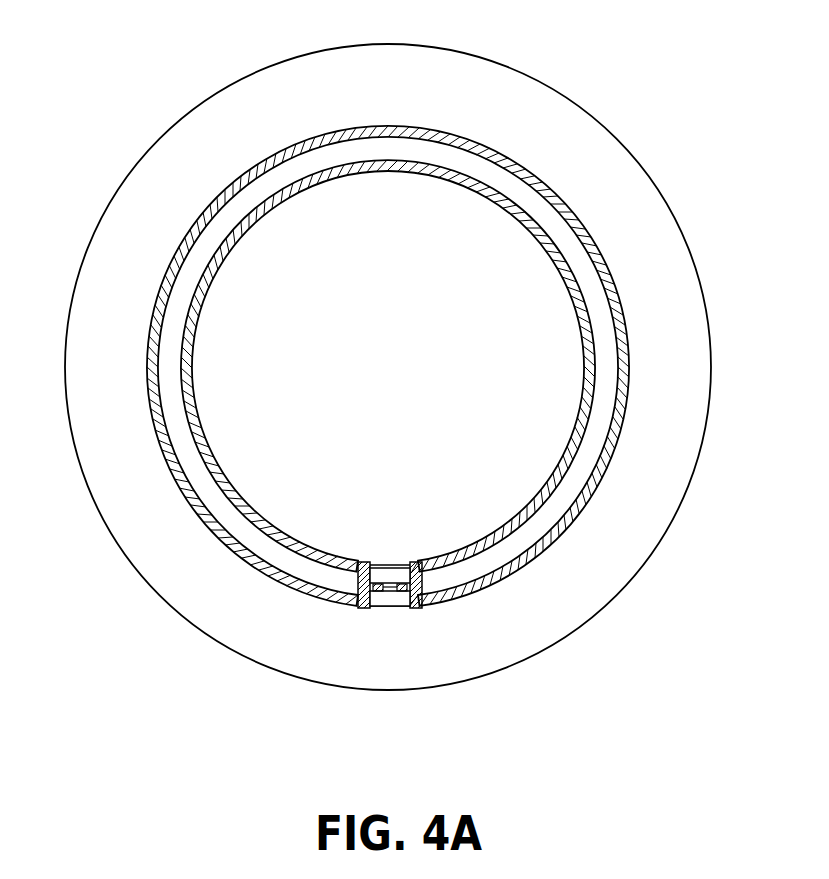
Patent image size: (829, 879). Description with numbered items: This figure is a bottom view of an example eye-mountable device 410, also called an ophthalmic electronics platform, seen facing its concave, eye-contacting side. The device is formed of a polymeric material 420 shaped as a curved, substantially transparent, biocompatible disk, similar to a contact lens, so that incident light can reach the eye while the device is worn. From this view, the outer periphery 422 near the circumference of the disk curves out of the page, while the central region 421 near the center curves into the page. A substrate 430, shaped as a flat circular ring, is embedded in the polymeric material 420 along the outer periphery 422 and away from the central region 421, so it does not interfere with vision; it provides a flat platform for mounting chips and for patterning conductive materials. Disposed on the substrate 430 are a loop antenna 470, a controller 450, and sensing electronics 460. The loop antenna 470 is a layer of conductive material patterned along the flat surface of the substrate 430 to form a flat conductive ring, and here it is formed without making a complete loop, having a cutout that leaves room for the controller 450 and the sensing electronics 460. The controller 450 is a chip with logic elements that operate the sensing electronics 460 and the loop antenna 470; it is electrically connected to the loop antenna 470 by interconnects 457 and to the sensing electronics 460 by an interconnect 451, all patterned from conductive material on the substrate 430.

The eye-mountable device 410 is at (386, 364).
The polymeric material 420 is at (108, 541).
The central region 421 is at (345, 325).
The outer periphery 422 is at (326, 83).
The substrate 430 is at (575, 520).
The loop antenna 470 is at (513, 555).
The controller 450 is at (382, 598).
The interconnect 451 is at (392, 588).
The interconnects 457 is at (417, 601).
The sensing electronics 460 is at (388, 577).